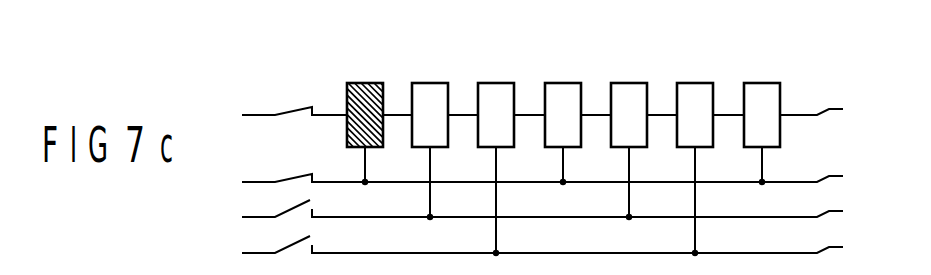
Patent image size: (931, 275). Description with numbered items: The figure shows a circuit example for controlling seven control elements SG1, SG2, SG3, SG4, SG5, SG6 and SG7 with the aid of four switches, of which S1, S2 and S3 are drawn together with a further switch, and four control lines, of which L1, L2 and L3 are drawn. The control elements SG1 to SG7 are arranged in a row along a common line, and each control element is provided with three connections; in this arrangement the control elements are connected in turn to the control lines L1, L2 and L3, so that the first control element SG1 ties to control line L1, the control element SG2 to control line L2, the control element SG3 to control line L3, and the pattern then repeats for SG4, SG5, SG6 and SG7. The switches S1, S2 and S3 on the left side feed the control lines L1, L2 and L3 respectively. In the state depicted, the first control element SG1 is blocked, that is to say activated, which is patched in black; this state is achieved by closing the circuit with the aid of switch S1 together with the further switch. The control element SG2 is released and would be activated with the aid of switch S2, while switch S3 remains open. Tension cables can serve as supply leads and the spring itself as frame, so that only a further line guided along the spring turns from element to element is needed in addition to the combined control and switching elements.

The first control element SG1 is at (365, 83).
The control element SG2 is at (430, 83).
The control element SG3 is at (496, 83).
The control element SG4 is at (563, 83).
The control element SG5 is at (629, 83).
The control element SG6 is at (695, 83).
The control element SG7 is at (762, 83).
The switch S1 is at (276, 150).
The switch S2 is at (261, 217).
The switch S3 is at (261, 253).
The control line L1 is at (597, 136).
The control line L2 is at (597, 206).
The control line L3 is at (597, 240).